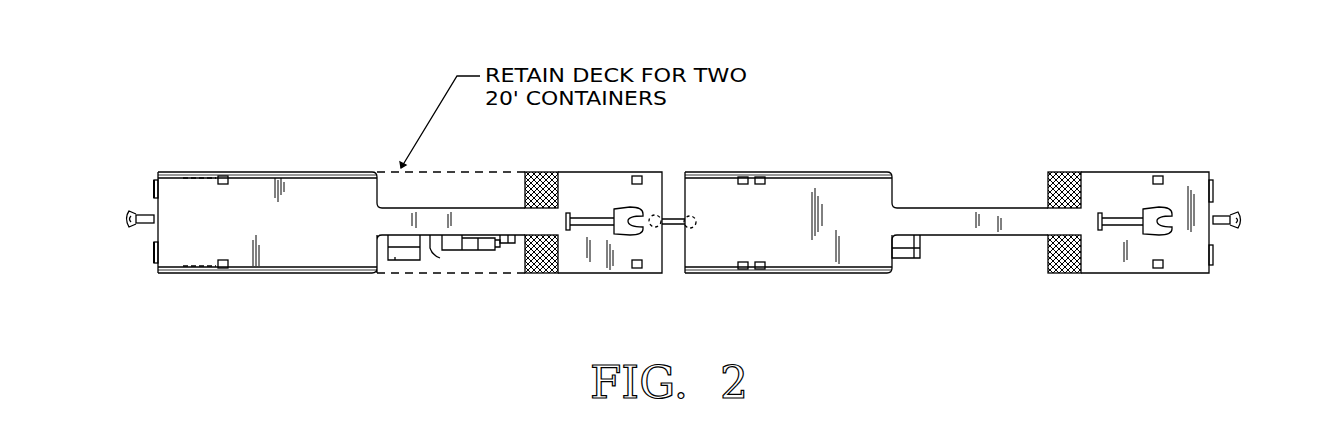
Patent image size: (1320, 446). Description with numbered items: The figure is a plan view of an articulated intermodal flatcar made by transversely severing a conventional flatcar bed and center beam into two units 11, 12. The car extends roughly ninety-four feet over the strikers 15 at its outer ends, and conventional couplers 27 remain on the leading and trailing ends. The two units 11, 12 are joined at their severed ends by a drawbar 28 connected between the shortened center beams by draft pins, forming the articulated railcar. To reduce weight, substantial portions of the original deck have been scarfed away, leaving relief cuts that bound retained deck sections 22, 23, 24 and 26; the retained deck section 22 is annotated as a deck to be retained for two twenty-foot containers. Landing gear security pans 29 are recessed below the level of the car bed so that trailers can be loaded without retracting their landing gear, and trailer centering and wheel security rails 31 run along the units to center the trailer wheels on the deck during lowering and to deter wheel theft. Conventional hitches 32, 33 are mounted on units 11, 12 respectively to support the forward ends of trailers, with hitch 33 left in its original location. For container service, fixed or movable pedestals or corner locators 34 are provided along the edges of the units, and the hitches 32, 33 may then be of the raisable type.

The unit 11 is at (340, 166).
The unit 12 is at (843, 162).
The striker 15 is at (157, 237).
The section 22 is at (452, 209).
The section 23 is at (435, 237).
The section 24 is at (982, 208).
The section 26 is at (968, 236).
The coupler 27 is at (139, 212).
The drawbar 28 is at (668, 215).
The landing gear security pan 29 is at (545, 172).
The trailer centering and wheel security rail 31 is at (250, 172).
The hitch 32 is at (623, 207).
The hitch 33 is at (1163, 208).
The corner locator 34 is at (222, 176).